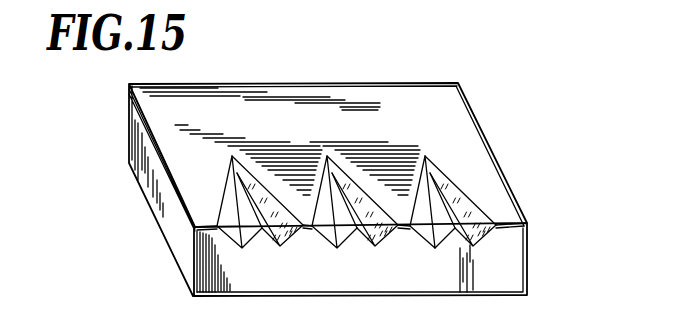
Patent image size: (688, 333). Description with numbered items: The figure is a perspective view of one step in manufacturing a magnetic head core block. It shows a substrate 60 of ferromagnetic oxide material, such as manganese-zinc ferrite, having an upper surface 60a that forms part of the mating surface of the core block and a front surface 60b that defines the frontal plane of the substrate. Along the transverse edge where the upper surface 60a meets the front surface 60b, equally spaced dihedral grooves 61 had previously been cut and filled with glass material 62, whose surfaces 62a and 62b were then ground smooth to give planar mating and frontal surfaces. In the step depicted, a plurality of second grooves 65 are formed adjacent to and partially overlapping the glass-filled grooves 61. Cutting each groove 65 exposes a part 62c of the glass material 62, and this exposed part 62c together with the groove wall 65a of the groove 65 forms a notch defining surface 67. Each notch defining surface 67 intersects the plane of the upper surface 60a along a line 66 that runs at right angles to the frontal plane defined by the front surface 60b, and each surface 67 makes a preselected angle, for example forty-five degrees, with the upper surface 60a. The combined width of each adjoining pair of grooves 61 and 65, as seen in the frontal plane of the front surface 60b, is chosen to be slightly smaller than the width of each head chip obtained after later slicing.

The substrate 60 is at (270, 84).
The upper surface 60a is at (360, 105).
The front surface 60b is at (500, 268).
The dihedral groove 61 is at (493, 222).
The glass material 62 is at (480, 220).
The surface of glass material 62a is at (272, 240).
The surface of glass material 62b is at (380, 234).
The exposed part of glass material 62c is at (343, 226).
The second groove 65 is at (423, 227).
The groove wall 65a is at (442, 232).
The line 66 is at (436, 174).
The notch defining surface 67 is at (338, 222).